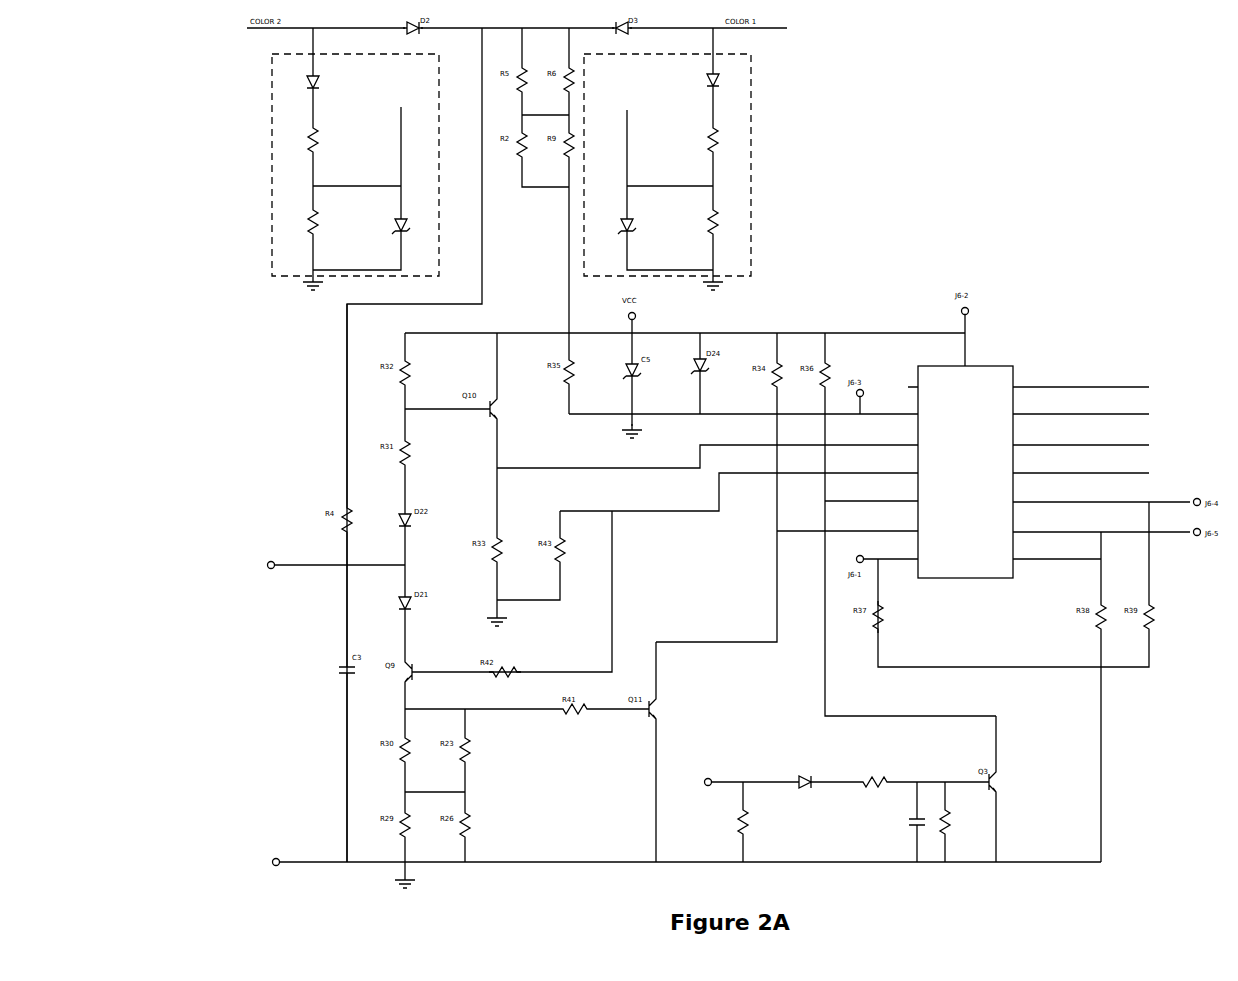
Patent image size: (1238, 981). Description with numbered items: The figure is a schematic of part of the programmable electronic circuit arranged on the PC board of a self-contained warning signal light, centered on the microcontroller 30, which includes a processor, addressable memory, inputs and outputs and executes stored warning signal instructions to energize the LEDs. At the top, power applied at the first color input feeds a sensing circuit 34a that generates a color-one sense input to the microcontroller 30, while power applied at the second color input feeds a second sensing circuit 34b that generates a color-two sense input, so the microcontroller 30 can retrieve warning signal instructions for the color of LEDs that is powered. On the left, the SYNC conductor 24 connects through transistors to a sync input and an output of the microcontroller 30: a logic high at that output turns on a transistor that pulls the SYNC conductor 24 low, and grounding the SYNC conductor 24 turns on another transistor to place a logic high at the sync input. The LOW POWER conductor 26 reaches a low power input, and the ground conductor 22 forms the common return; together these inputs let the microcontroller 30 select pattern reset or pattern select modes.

The ground conductor 22 is at (275, 860).
The SYNC conductor 24 is at (270, 562).
The Low Power conductor 26 is at (705, 782).
The microcontroller 30 is at (1008, 575).
The sensing circuit 34a is at (751, 100).
The second sensing circuit 34b is at (272, 190).